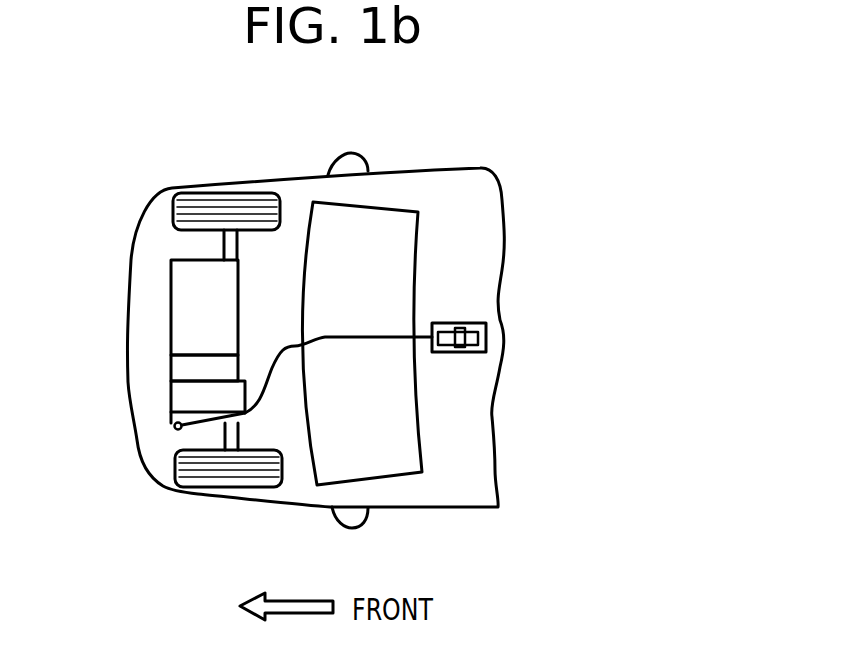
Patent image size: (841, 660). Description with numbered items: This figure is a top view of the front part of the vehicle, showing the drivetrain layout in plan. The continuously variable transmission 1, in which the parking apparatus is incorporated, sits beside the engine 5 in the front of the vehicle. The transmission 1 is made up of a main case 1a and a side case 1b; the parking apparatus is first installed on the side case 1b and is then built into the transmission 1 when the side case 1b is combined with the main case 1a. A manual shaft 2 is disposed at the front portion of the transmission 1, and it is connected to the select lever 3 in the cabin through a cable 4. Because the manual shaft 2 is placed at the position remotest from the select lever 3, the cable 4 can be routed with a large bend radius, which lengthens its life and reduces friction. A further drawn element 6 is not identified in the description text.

The continuously variable transmission 1 is at (160, 405).
The main case 1a is at (183, 392).
The side case 1b is at (192, 426).
The manual shaft 2 is at (174, 429).
The select lever 3 is at (465, 325).
The cable 4 is at (380, 338).
The engine 5 is at (193, 285).
The reduction gear 6 is at (172, 363).